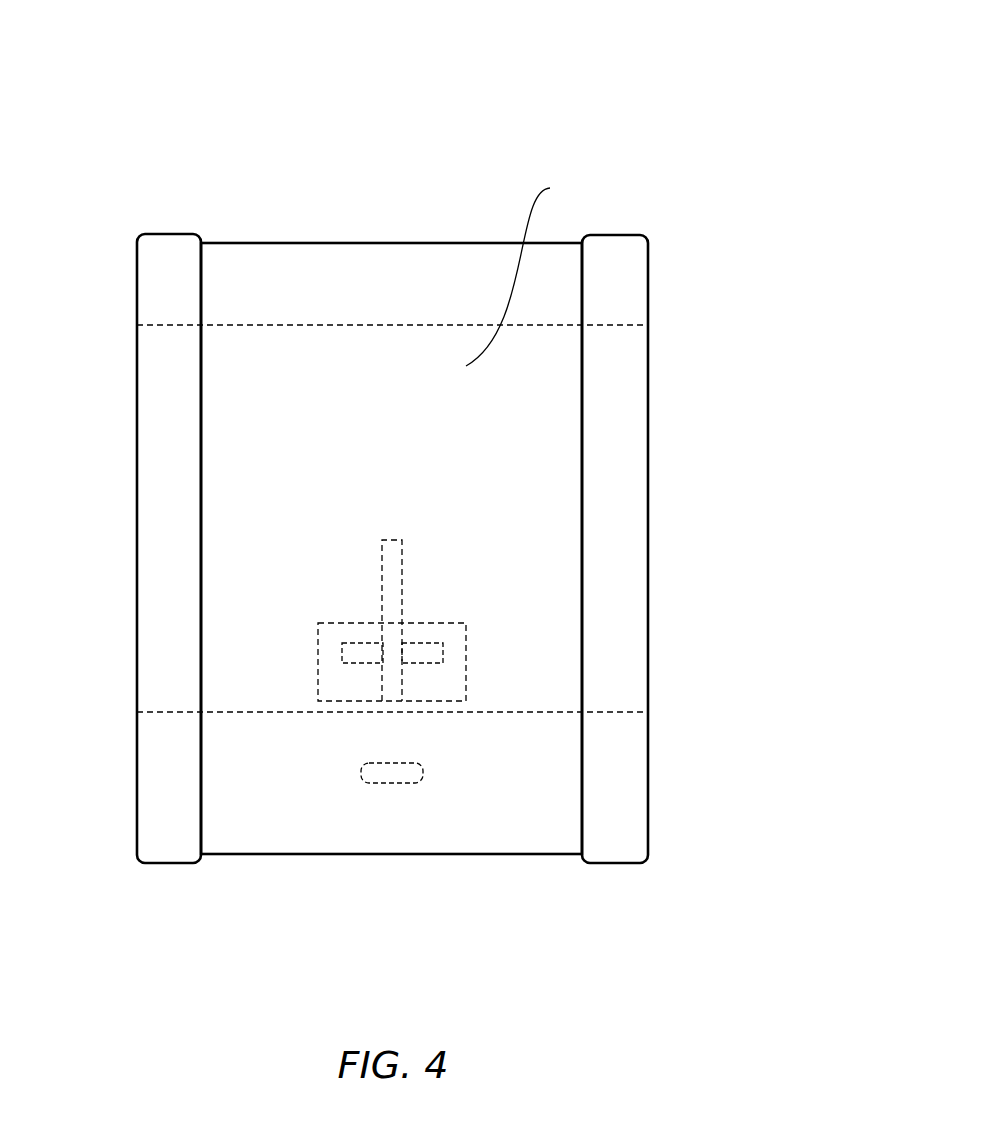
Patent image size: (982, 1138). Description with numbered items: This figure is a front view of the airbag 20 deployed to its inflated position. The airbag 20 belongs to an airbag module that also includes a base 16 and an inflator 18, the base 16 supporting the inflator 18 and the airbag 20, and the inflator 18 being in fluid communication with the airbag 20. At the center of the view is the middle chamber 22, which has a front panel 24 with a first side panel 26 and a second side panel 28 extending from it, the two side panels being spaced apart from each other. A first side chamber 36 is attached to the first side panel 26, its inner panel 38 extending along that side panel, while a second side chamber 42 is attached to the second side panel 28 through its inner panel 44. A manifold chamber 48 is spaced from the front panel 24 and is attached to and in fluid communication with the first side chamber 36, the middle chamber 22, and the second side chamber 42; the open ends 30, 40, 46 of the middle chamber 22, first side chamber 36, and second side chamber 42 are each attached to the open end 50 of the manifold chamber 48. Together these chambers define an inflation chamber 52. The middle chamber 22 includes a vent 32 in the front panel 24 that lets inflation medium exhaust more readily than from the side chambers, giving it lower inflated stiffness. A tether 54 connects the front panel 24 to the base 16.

The base 16 is at (320, 696).
The inflator 18 is at (352, 644).
The airbag 20 is at (652, 127).
The middle chamber 22 is at (401, 239).
The front panel 24 is at (523, 270).
The first side panel 26 is at (205, 431).
The second side panel 28 is at (578, 431).
The open end 30 is at (388, 388).
The vent 32 is at (380, 790).
The first side chamber 36 is at (137, 232).
The inner panel 38 is at (197, 388).
The open end 40 is at (170, 568).
The second side chamber 42 is at (646, 232).
The inner panel 44 is at (586, 388).
The open end 46 is at (612, 568).
The manifold chamber 48 is at (300, 319).
The open end 50 is at (620, 497).
The inflation chamber 52 is at (280, 541).
The tether 54 is at (403, 579).